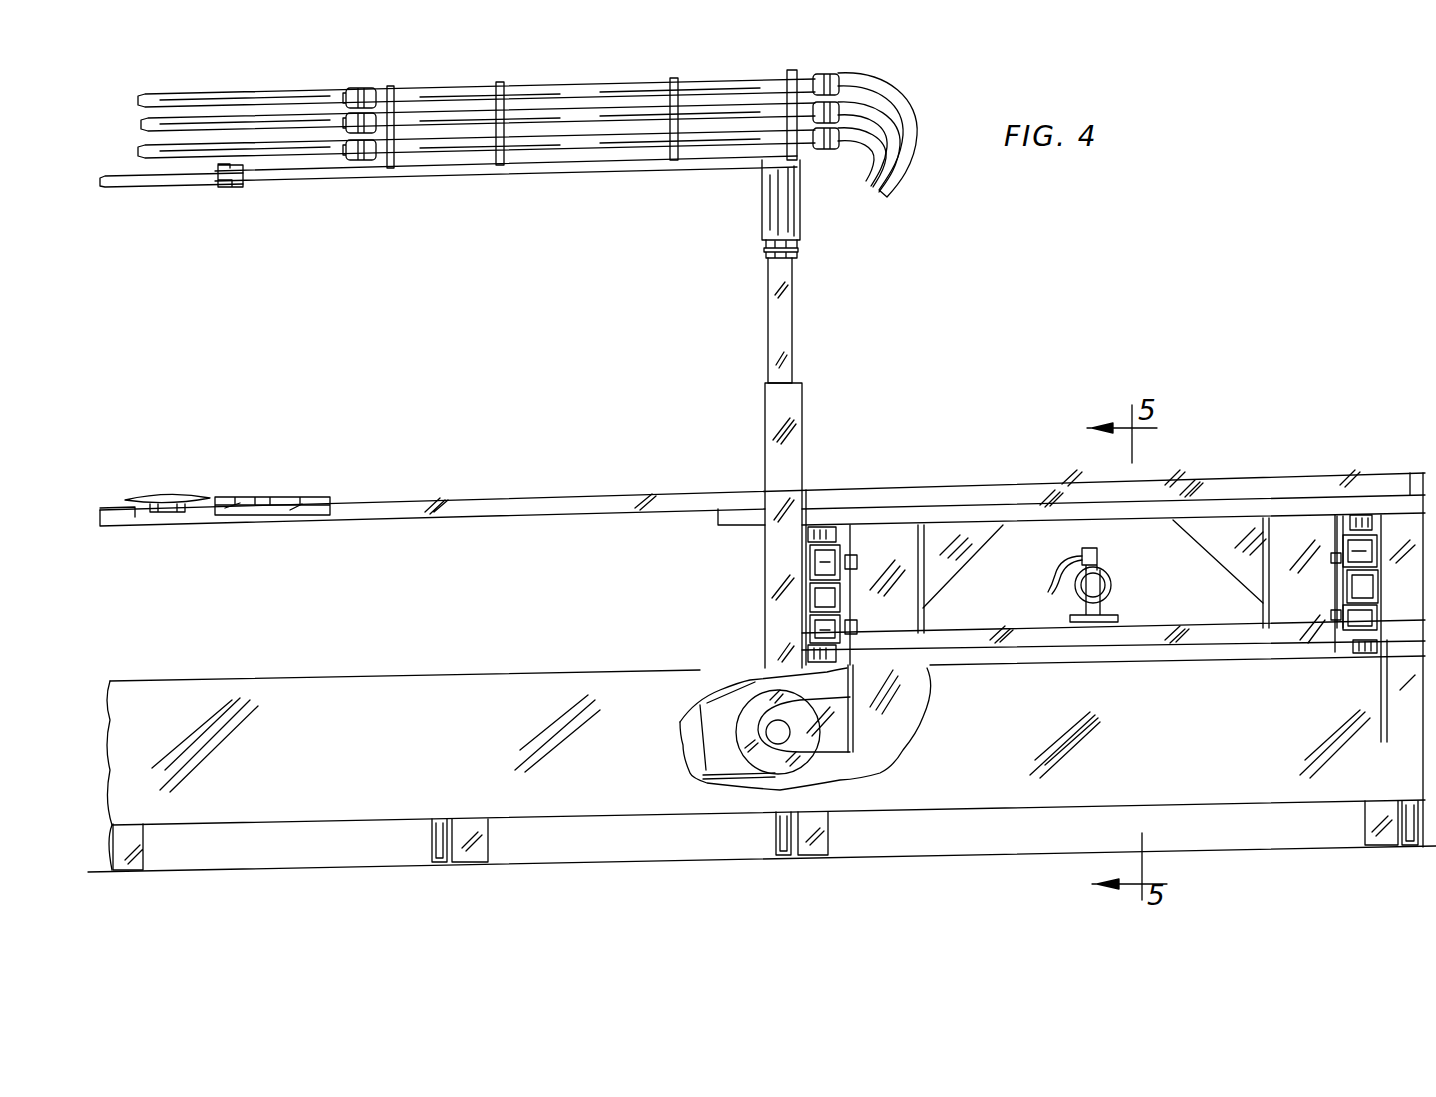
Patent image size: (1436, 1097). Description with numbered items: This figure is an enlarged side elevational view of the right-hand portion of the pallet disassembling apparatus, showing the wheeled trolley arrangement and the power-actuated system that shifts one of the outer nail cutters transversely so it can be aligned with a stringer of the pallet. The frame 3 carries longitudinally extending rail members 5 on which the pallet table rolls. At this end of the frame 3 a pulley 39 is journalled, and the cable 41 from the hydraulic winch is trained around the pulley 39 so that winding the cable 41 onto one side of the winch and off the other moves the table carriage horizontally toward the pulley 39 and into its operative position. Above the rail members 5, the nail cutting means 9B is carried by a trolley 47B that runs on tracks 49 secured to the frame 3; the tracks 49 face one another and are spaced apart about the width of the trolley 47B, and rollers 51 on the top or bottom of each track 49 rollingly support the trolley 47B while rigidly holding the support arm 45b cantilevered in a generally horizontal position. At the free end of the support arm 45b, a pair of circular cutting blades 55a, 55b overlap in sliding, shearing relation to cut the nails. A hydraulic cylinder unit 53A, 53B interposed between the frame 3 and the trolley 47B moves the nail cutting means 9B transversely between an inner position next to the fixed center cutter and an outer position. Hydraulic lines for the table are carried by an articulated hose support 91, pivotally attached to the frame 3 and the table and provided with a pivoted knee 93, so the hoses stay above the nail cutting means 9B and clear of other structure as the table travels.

The frame 3 is at (334, 612).
The rail members 5 is at (442, 690).
The nail cutting means 9B is at (332, 452).
The pulley 39 is at (780, 762).
The cable 41 is at (805, 727).
The support arm 45b is at (657, 495).
The trolley 47B is at (978, 462).
The tracks 49 is at (840, 598).
The rollers 51 is at (845, 560).
The hydraulic cylinder unit 53A is at (1125, 585).
The hydraulic cylinder unit 53B is at (1112, 580).
The circular cutting blade 55a is at (227, 468).
The circular cutting blade 55b is at (158, 495).
The articulated hose support 91 is at (735, 222).
The pivoted knee 93 is at (224, 188).